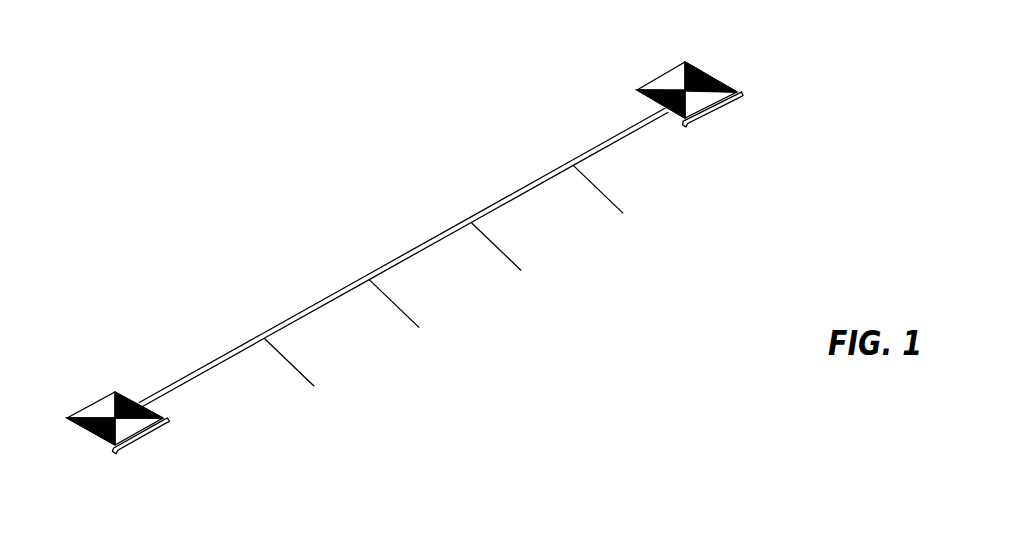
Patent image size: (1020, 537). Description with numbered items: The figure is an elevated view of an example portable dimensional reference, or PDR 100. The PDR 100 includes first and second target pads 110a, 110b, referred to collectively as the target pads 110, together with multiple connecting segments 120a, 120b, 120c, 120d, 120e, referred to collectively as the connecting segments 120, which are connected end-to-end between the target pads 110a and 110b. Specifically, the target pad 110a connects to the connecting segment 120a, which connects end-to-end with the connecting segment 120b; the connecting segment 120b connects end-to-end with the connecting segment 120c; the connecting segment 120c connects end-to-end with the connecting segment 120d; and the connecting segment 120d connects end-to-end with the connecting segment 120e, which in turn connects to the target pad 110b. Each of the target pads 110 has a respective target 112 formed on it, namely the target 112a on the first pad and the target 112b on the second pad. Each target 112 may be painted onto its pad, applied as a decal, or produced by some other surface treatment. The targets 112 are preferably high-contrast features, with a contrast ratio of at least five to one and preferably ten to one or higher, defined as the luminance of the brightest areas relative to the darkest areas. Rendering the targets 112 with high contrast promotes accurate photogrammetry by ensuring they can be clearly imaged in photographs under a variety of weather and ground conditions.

The portable dimensional reference 100 is at (835, 113).
The target pads 110 is at (713, 120).
The first target pad 110a is at (91, 386).
The second target pad 110b is at (649, 67).
The targets 112 is at (135, 426).
The first target 112a is at (128, 438).
The second target 112b is at (712, 95).
The connecting segments 120 is at (396, 196).
The first connecting segment 120a is at (226, 370).
The second connecting segment 120b is at (340, 309).
The third connecting segment 120c is at (444, 250).
The fourth connecting segment 120d is at (546, 192).
The fifth connecting segment 120e is at (621, 137).